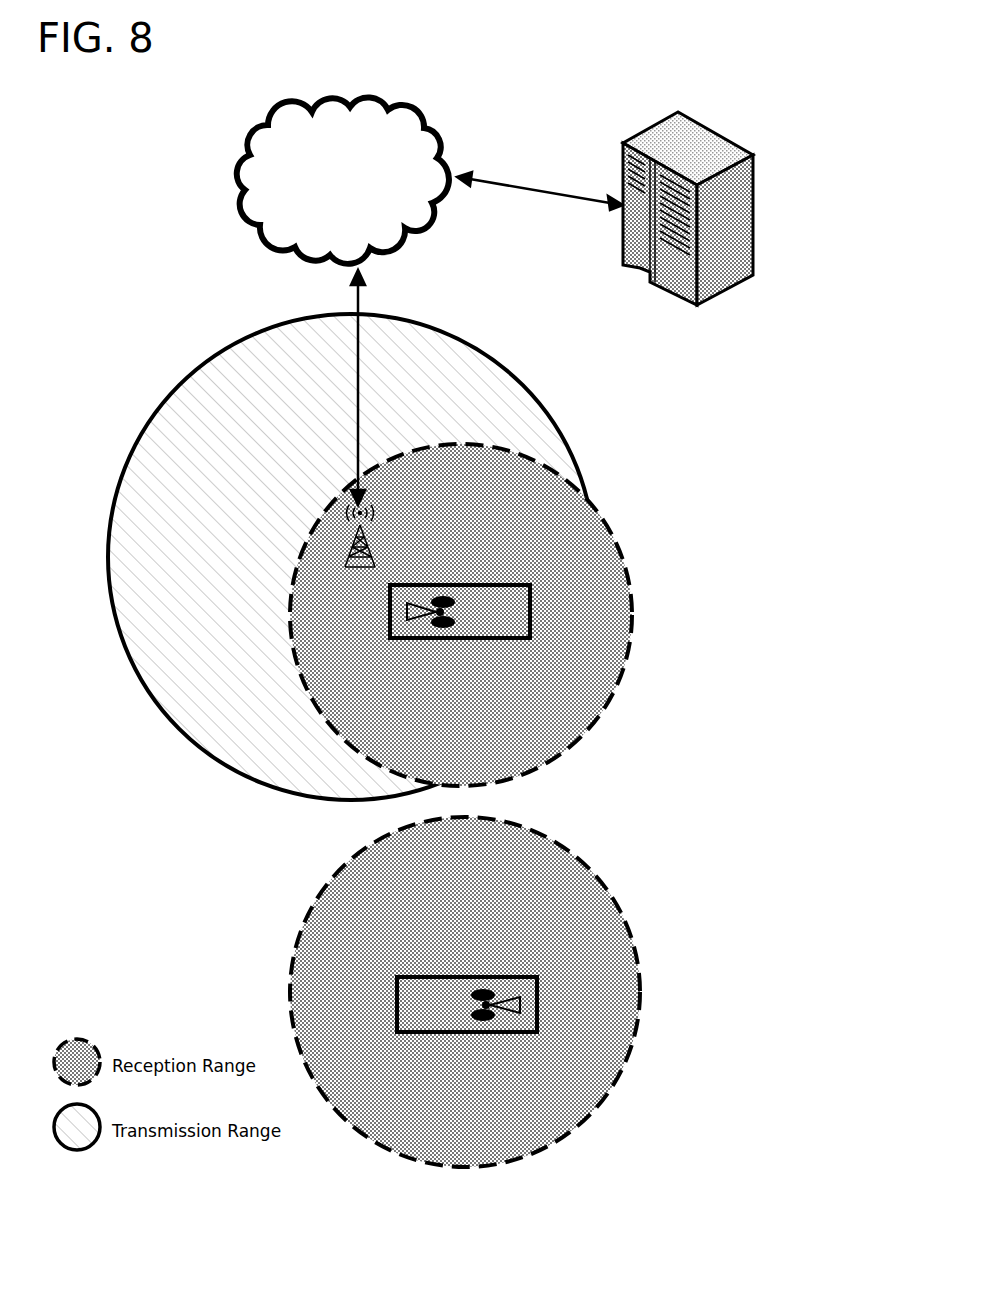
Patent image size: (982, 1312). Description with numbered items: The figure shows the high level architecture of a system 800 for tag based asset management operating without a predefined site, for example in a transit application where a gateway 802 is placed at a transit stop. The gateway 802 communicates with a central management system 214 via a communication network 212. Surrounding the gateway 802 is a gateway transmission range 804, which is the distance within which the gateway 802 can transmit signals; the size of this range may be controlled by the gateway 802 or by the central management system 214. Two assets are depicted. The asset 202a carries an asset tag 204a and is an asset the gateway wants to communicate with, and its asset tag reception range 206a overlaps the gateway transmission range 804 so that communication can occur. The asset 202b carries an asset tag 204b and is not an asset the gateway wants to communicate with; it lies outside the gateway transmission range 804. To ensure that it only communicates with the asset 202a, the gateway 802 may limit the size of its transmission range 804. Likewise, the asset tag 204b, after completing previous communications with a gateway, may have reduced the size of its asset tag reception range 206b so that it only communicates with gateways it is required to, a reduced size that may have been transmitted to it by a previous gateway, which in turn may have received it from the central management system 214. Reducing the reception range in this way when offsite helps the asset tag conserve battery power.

The system 800 is at (215, 145).
The communication network 212 is at (428, 217).
The central management system 214 is at (697, 307).
The gateway transmission range 804 is at (508, 373).
The gateway 802 is at (375, 513).
The asset tag reception range 206a is at (425, 443).
The asset 202a is at (497, 583).
The asset tag 204a is at (440, 622).
The asset tag reception range 206b is at (297, 965).
The asset 202b is at (480, 977).
The asset tag 204b is at (495, 1012).